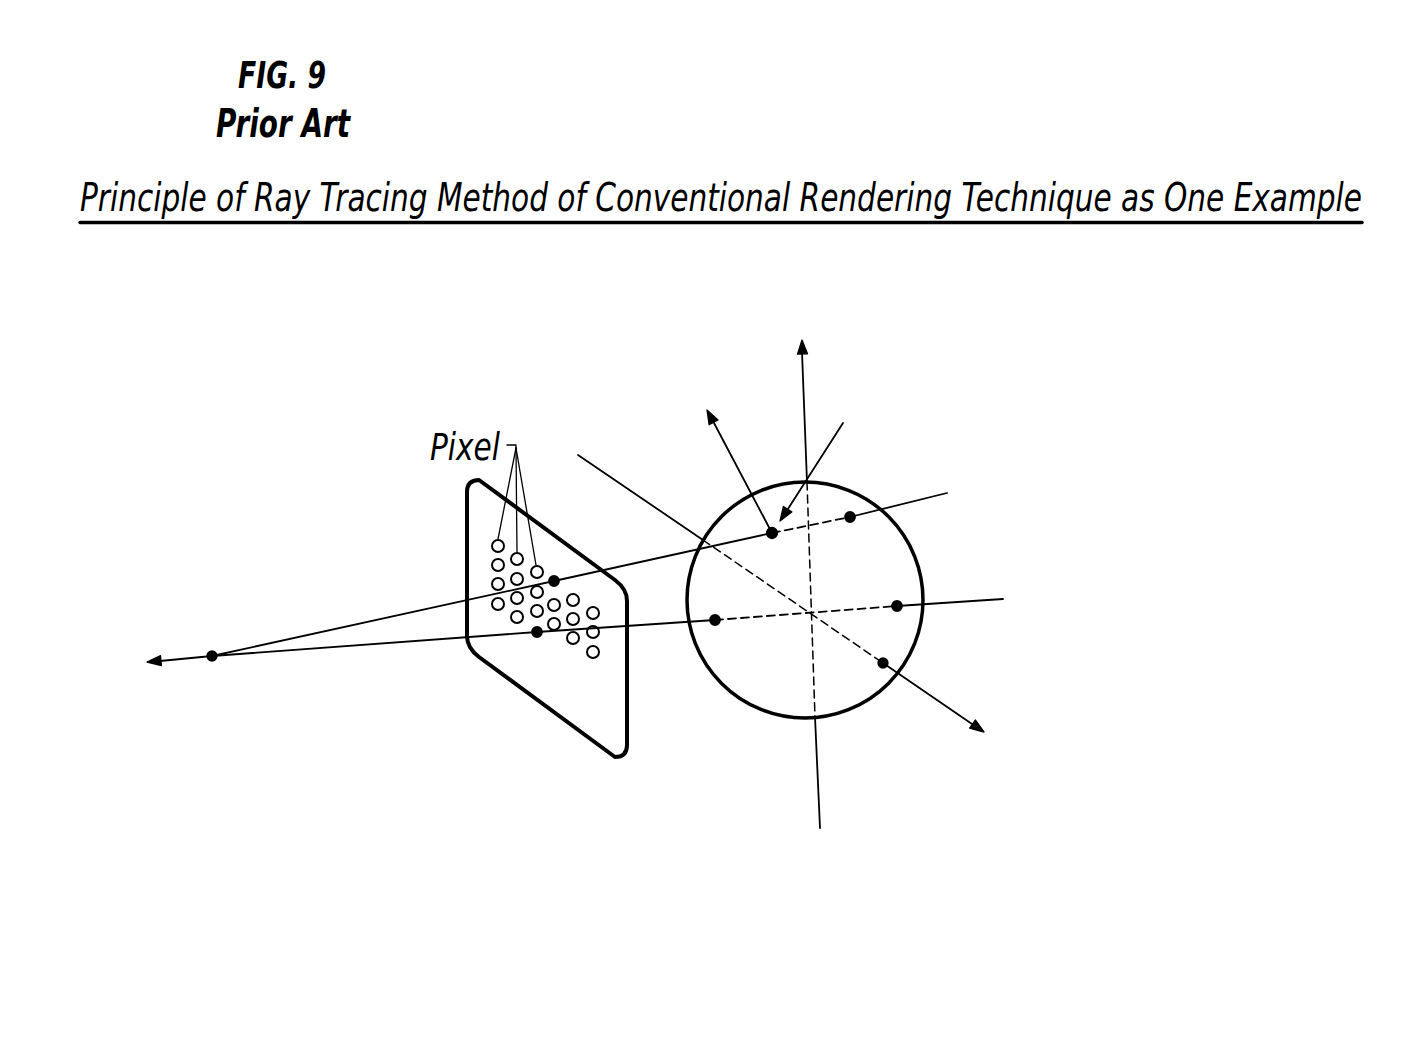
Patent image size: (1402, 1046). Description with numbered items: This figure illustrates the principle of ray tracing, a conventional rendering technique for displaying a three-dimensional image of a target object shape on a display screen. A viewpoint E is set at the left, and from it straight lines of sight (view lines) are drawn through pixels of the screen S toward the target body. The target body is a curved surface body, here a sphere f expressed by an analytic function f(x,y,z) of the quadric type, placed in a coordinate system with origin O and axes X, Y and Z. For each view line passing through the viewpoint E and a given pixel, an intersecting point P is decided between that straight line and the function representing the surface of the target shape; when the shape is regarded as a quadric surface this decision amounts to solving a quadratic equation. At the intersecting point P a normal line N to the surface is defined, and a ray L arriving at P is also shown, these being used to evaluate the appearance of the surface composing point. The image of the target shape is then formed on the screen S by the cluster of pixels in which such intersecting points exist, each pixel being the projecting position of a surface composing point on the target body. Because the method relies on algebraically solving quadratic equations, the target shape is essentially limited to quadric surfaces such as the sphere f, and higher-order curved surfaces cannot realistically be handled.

The viewpoint E is at (216, 660).
The screen S is at (582, 738).
The intersecting point P is at (781, 555).
The origin O is at (789, 641).
The X axis X is at (792, 606).
The Y axis Y is at (807, 563).
The Z axis Z is at (166, 667).
The normal line N is at (636, 313).
The ray L is at (859, 370).
The sphere f is at (925, 600).